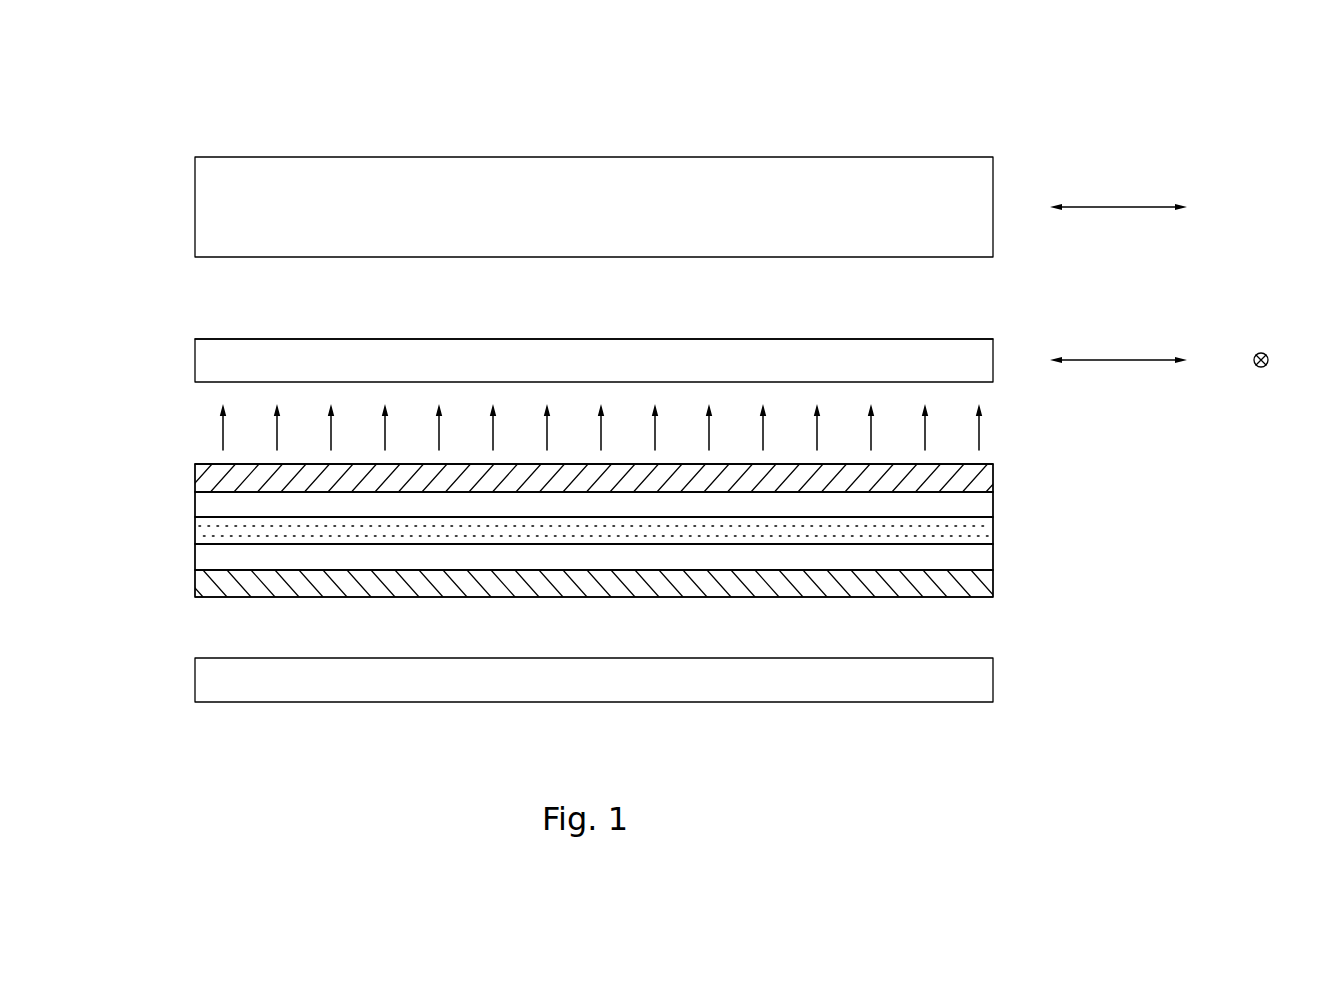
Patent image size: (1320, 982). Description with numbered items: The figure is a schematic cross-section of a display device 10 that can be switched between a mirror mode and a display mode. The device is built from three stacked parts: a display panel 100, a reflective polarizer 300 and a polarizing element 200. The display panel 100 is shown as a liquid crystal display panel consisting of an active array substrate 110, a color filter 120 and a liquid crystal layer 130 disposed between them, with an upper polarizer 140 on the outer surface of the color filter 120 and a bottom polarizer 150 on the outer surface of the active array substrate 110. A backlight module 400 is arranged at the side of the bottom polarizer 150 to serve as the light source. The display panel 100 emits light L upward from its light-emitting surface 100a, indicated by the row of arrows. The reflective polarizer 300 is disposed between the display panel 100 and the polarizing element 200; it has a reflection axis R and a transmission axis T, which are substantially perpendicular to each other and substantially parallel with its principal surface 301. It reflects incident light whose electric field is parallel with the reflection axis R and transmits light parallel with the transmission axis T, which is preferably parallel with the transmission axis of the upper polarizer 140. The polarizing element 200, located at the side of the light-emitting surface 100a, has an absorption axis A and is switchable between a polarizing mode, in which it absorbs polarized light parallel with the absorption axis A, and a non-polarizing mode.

The display device 10 is at (228, 83).
The polarizing element 200 is at (195, 206).
The reflective polarizer 300 is at (195, 360).
The principal surface 301 is at (213, 339).
The display panel 100 is at (183, 464).
The light-emitting surface 100a is at (212, 464).
The upper polarizer 140 is at (994, 481).
The color filter 120 is at (994, 508).
The liquid crystal layer 130 is at (994, 534).
The active array substrate 110 is at (994, 560).
The bottom polarizer 150 is at (994, 587).
The backlight module 400 is at (994, 680).
The light L is at (978, 432).
The absorption axis A is at (1118, 207).
The transmission axis T is at (1118, 360).
The reflection axis R is at (1260, 353).